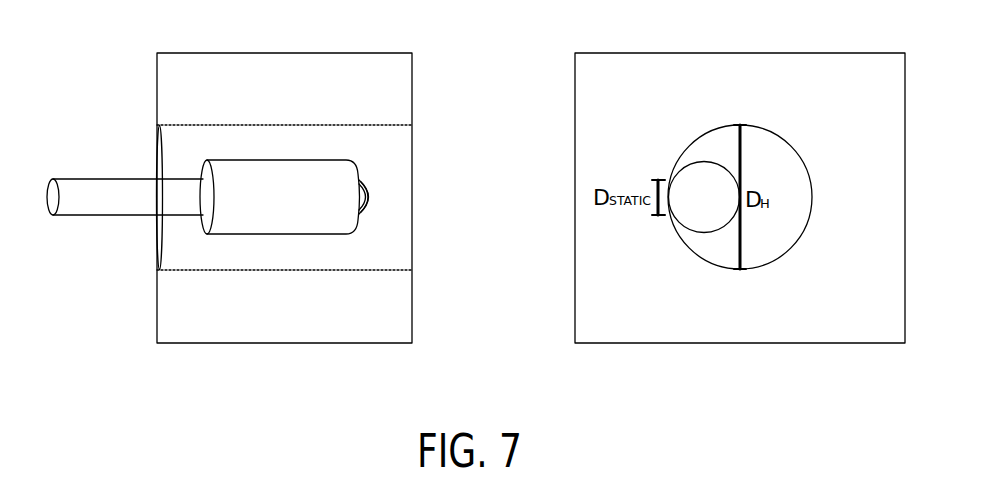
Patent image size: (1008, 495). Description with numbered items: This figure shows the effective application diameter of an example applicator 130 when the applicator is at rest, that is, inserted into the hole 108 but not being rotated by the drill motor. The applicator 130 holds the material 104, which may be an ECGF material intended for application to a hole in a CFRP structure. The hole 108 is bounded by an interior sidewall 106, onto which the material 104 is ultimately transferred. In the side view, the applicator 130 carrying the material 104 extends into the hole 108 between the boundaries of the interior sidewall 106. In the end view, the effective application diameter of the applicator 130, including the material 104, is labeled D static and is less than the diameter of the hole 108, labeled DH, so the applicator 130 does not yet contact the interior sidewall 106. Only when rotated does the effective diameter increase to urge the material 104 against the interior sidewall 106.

The applicator 130 is at (138, 190).
The material 104 is at (323, 160).
The hole 108 is at (396, 205).
The interior sidewall 106 is at (333, 277).